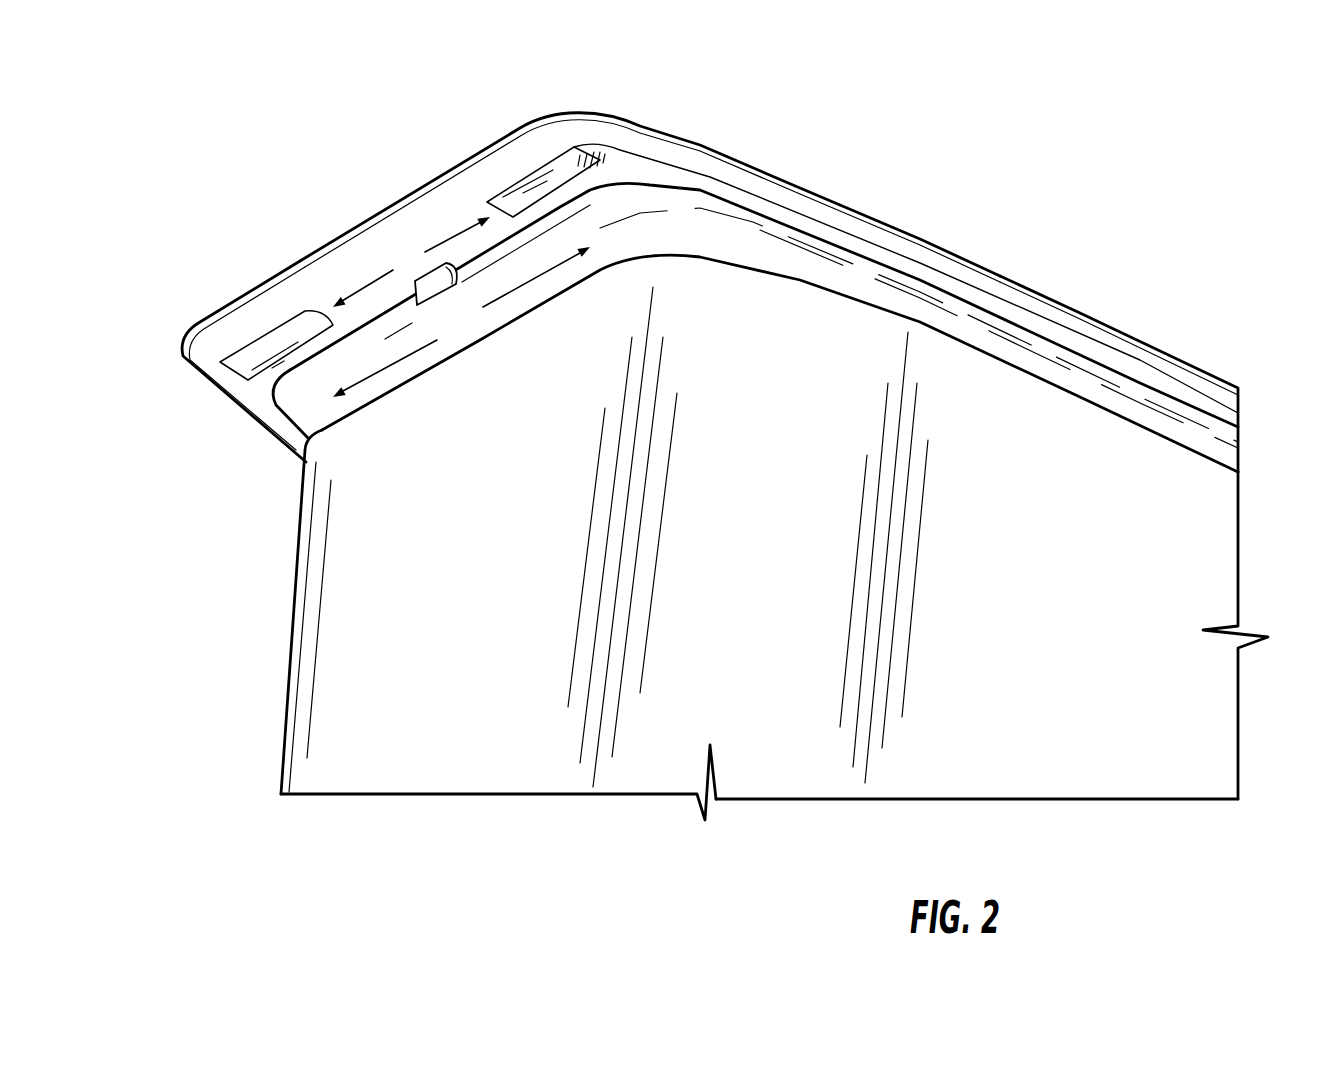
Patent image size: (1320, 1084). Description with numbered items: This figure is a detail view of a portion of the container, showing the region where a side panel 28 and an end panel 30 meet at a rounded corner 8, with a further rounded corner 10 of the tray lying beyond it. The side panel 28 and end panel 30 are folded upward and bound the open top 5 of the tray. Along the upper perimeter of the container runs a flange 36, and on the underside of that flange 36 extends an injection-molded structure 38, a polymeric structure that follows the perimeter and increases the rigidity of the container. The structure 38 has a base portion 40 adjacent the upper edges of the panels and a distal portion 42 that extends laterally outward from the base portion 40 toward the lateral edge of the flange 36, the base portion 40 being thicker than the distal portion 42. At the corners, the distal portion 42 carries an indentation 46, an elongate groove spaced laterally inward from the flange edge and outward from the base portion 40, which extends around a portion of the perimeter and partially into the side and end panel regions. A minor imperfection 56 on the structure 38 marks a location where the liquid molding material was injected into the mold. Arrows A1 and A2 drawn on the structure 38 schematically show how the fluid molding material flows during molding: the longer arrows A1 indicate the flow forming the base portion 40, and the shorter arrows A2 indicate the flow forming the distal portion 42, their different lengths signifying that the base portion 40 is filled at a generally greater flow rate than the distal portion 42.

The open top 5 is at (1088, 296).
The rounded corner 8 is at (280, 578).
The rounded corner 10 is at (694, 384).
The side panel 28 is at (1069, 637).
The end panel 30 is at (463, 580).
The flange 36 is at (627, 114).
The injection-molded structure 38 is at (261, 420).
The base portion 40 is at (633, 243).
The distal portion 42 is at (227, 327).
The indentation 46 is at (553, 170).
The imperfection 56 is at (449, 290).
The arrows A1 is at (550, 268).
The arrows A2 is at (447, 240).